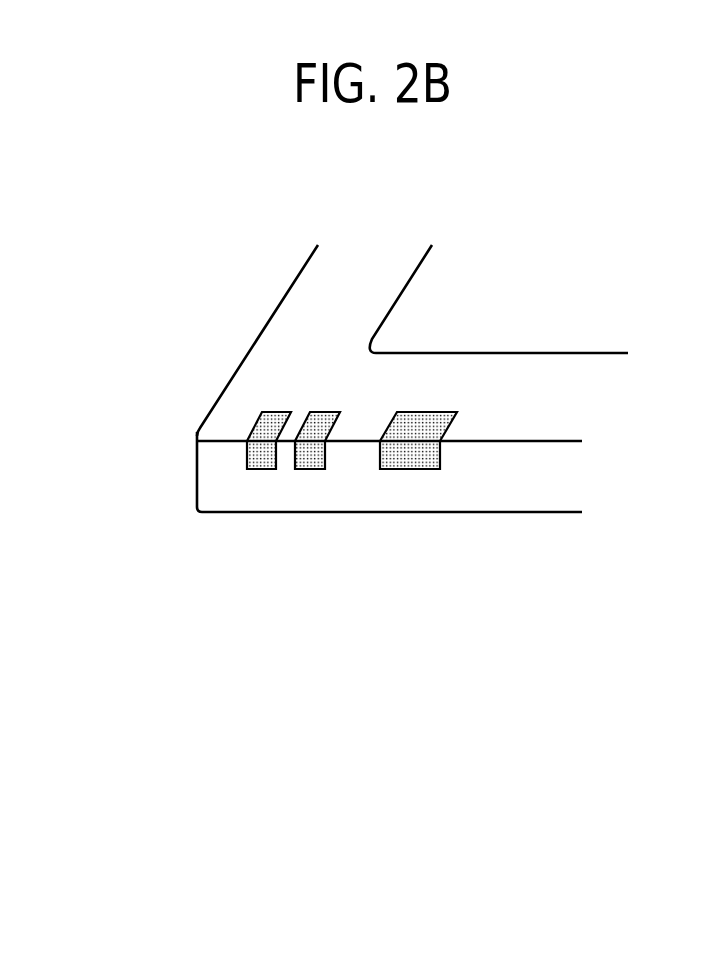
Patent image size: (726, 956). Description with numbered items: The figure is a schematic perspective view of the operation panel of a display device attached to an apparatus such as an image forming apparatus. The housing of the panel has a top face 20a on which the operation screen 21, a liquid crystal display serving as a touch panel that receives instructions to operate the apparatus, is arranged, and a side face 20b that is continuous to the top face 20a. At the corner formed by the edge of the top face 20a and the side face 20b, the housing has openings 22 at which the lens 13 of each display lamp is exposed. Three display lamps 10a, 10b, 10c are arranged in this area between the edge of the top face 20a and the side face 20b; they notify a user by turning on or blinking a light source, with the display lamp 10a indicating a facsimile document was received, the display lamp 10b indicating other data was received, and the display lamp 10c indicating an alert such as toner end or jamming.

The display lamp 10a is at (262, 452).
The display lamp 10b is at (310, 457).
The display lamp 10c is at (407, 458).
The lens 13 is at (327, 512).
The top face 20a is at (257, 375).
The side face 20b is at (210, 478).
The operation screen 21 is at (410, 325).
The opening 22 is at (286, 413).